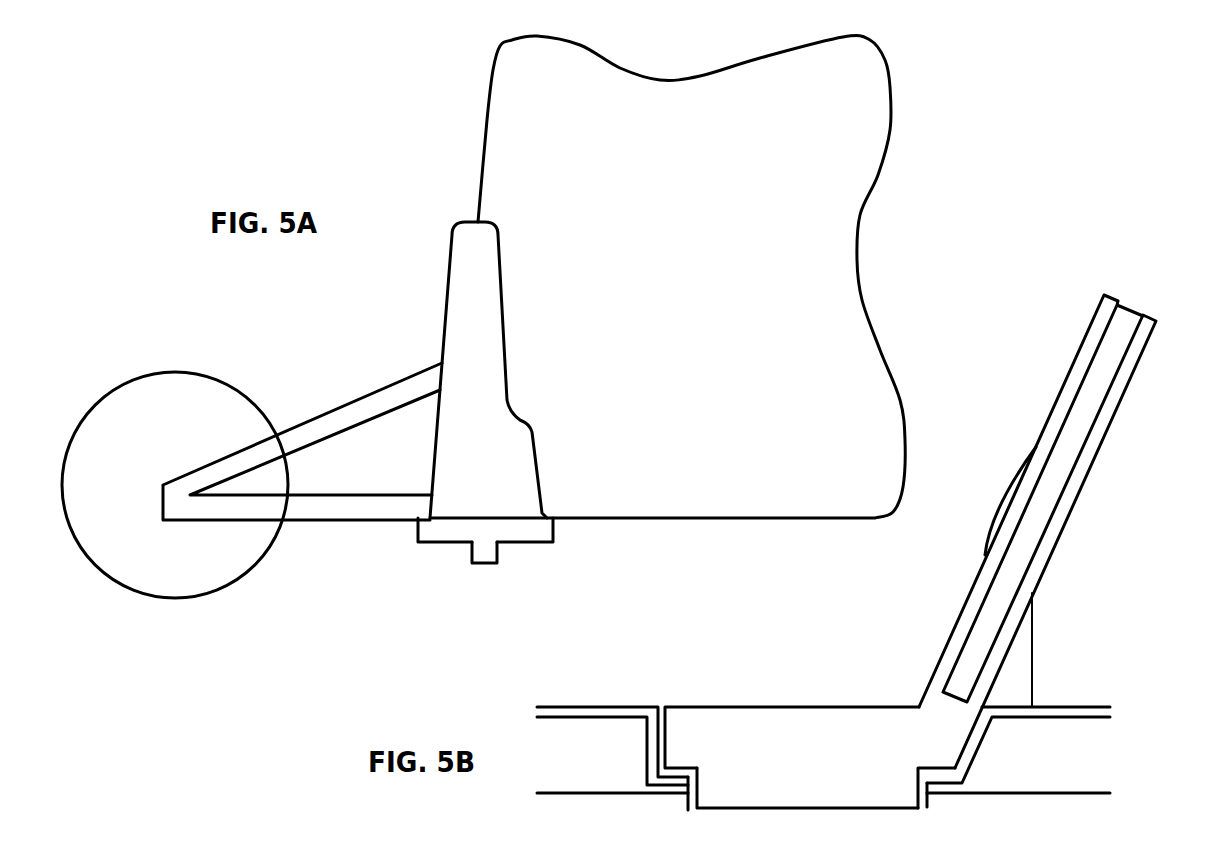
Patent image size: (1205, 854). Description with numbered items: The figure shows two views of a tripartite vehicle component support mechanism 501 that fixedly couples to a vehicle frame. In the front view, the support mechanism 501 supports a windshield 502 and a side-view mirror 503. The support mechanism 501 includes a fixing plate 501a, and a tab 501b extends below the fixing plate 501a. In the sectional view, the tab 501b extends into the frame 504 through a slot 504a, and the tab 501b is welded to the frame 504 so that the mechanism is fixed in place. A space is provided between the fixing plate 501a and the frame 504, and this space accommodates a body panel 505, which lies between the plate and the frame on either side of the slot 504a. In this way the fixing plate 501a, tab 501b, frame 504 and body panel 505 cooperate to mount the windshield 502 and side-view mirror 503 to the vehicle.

In FIG. 5A, the support mechanism 501 is at (366, 316).
In FIG. 5B, the support mechanism 501 is at (872, 593).
In FIG. 5A, the fixing plate 501a is at (432, 545).
In FIG. 5B, the fixing plate 501a is at (722, 705).
In FIG. 5A, the tab 501b is at (485, 567).
In FIG. 5B, the tab 501b is at (762, 808).
In FIG. 5A, the windshield 502 is at (711, 334).
In FIG. 5A, the side-view mirror 503 is at (173, 449).
In FIG. 5B, the side-view mirror 503 is at (1035, 667).
In FIG. 5B, the frame 504 is at (582, 792).
In FIG. 5B, the slot 504a is at (674, 810).
In FIG. 5B, the body panel 505 is at (602, 705).